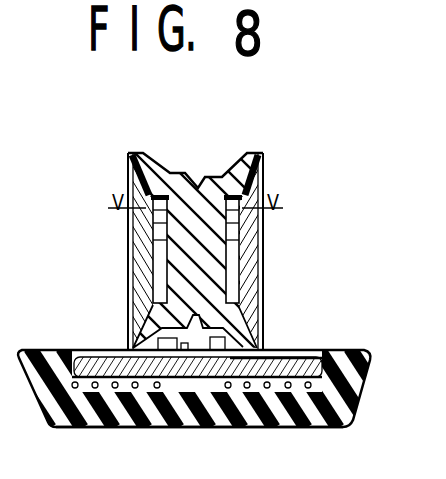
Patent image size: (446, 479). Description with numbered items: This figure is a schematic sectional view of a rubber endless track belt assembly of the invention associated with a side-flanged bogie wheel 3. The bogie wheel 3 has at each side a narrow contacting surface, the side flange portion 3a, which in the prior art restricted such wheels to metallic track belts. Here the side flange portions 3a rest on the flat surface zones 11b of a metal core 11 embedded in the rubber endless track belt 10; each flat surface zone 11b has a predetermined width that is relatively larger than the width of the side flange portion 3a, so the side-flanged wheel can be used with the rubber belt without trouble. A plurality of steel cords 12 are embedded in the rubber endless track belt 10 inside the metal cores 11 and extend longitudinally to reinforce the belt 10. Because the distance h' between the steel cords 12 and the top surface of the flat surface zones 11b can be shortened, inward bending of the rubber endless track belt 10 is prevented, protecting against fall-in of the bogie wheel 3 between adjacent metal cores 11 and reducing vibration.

The side-flanged bogie wheel 3 is at (222, 249).
The side flange portion 3a is at (134, 152).
The rubber endless track belt 10 is at (36, 356).
The metal core 11 is at (192, 404).
The flat surface zone 11b is at (129, 345).
The steel cord 12 is at (85, 404).
The distance between steel cords and flat surface zone top surface h' is at (199, 350).